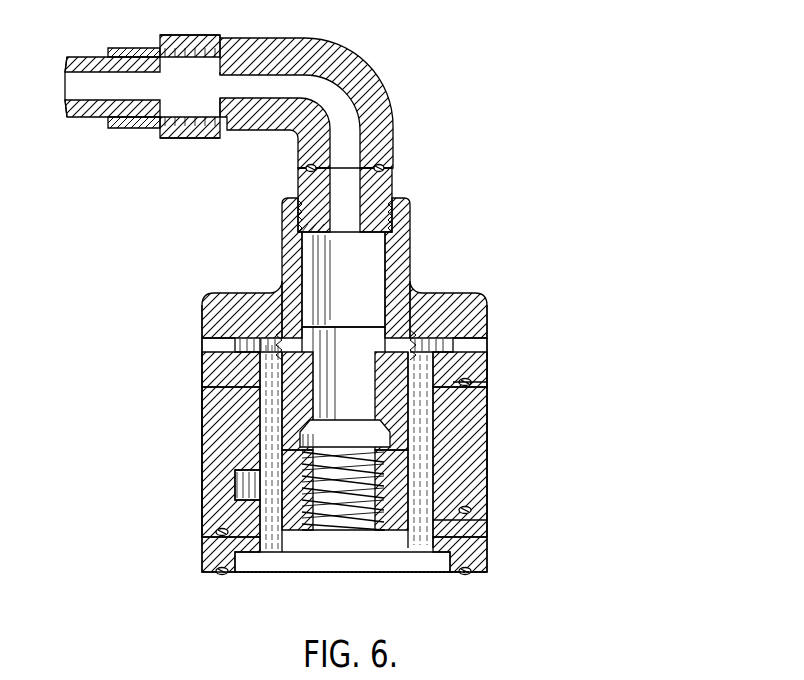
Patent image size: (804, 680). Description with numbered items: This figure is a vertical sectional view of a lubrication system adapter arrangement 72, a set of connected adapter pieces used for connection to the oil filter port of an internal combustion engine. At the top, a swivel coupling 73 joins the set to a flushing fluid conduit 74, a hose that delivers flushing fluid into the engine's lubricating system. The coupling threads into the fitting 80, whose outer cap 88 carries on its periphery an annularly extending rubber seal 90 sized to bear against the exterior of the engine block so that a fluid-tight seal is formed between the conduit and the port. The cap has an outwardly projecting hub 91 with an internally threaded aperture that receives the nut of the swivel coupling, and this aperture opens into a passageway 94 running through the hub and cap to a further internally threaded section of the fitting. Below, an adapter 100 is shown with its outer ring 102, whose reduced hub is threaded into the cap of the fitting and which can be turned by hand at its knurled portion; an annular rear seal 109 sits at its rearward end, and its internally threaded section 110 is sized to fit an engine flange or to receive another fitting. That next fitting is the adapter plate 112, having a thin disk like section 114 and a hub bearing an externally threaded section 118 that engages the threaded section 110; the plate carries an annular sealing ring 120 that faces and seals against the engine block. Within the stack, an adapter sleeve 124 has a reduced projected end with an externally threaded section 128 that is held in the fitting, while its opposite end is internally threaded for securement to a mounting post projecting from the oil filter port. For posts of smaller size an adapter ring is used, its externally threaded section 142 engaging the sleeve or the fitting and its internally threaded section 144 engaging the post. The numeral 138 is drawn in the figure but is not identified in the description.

The lubrication system adapter arrangement 72 is at (502, 270).
The swivel coupling 73 is at (393, 122).
The flushing fluid conduit 74 is at (80, 117).
The fitting 80 is at (487, 312).
The outer cap 88 is at (487, 345).
The rubber seal 90 is at (470, 392).
The hub 91 is at (282, 226).
The passageway 94 is at (330, 270).
The adapter 100 is at (487, 445).
The outer ring 102 is at (487, 462).
The annular rear seal 109 is at (487, 515).
The internally threaded section 110 is at (487, 490).
The adapter plate 112 is at (202, 556).
The disk like section 114 is at (487, 558).
The externally threaded section 118 is at (240, 505).
The annular sealing ring 120 is at (487, 578).
The adapter sleeve 124 is at (280, 402).
The externally threaded section 128 is at (290, 328).
The poppet 138 is at (300, 458).
The externally threaded section 142 is at (385, 530).
The internally threaded section 144 is at (360, 535).